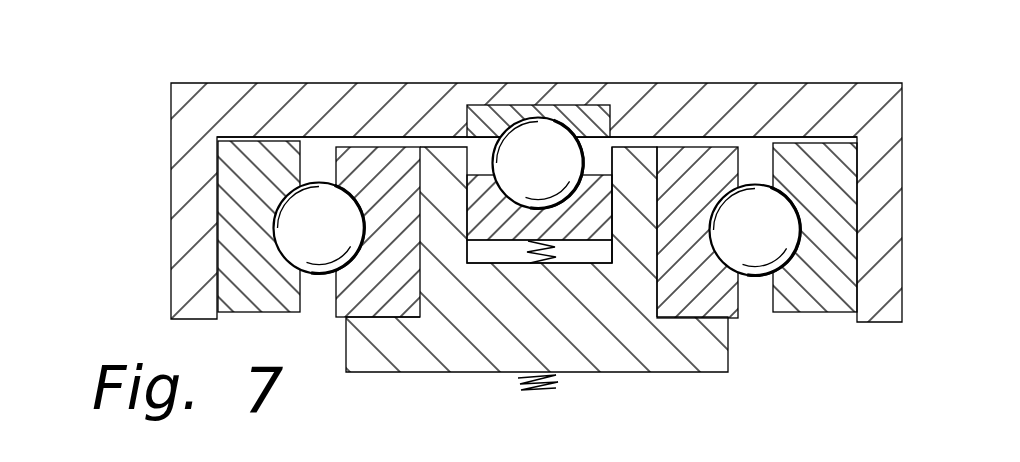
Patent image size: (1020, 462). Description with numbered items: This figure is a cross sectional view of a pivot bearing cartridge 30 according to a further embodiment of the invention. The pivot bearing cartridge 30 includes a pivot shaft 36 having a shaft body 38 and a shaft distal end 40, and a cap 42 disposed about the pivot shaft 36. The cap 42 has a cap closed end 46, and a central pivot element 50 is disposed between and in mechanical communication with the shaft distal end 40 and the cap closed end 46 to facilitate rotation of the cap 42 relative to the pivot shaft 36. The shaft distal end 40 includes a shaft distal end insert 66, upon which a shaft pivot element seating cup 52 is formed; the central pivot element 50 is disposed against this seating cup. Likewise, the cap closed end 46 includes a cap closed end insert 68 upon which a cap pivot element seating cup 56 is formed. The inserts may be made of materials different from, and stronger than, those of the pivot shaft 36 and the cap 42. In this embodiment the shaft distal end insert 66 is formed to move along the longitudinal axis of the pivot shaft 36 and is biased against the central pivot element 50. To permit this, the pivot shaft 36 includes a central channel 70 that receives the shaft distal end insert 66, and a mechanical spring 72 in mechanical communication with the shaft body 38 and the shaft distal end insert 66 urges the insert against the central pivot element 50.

The pivot bearing cartridge 30 is at (138, 88).
The pivot shaft 36 is at (516, 341).
The shaft body 38 is at (583, 262).
The shaft distal end 40 is at (640, 165).
The cap 42 is at (737, 98).
The cap closed end 46 is at (665, 100).
The central pivot element 50 is at (534, 128).
The shaft pivot element seating cup 52 is at (495, 203).
The cap pivot element seating cup 56 is at (538, 137).
The shaft distal end insert 66 is at (592, 210).
The cap closed end insert 68 is at (575, 100).
The central channel 70 is at (543, 285).
The mechanical spring 72 is at (517, 262).